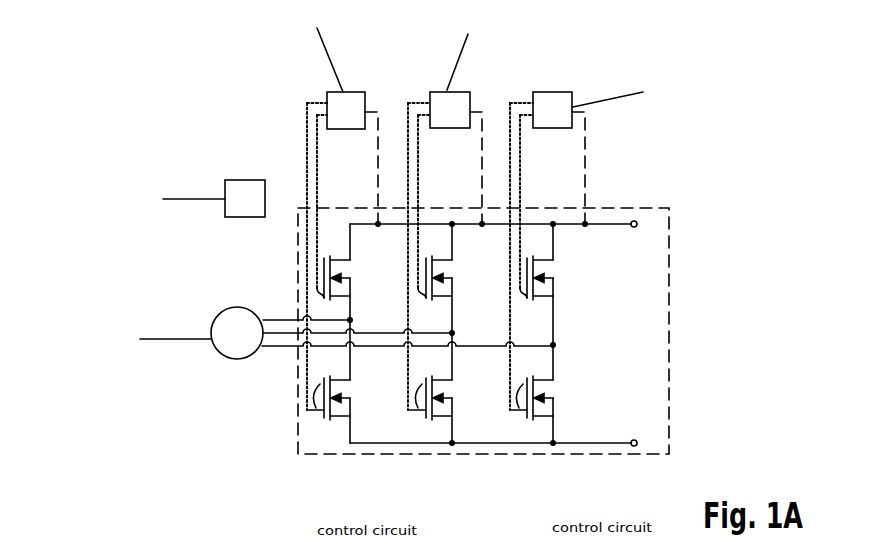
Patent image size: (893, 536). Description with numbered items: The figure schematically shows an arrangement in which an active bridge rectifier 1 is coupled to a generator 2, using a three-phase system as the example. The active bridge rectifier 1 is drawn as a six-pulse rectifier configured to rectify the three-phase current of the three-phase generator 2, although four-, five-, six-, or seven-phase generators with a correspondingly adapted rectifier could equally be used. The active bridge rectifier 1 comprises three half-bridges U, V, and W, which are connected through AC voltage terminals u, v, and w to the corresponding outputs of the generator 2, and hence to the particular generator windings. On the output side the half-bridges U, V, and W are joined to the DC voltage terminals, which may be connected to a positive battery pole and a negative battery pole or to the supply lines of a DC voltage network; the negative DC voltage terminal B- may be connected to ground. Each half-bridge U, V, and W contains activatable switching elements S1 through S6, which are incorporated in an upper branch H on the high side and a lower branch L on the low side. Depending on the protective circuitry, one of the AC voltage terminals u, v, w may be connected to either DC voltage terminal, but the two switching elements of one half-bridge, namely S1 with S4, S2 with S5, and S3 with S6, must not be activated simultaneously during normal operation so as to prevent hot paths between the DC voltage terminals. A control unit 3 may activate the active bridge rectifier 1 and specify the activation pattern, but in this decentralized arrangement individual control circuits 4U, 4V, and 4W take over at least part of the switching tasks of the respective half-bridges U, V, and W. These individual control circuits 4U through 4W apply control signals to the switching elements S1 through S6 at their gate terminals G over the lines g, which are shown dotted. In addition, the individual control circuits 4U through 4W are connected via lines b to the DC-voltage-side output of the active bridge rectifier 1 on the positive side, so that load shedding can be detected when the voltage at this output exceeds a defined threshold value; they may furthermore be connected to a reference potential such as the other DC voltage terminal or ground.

The active bridge rectifier 1 is at (633, 207).
The generator 2 is at (237, 307).
The control unit 3 is at (244, 180).
The individual control circuit 4U is at (367, 93).
The individual control circuit 4V is at (470, 93).
The individual control circuit 4W is at (572, 93).
The switching element S1 is at (364, 258).
The switching element S2 is at (465, 258).
The switching element S3 is at (566, 258).
The switching element S4 is at (367, 410).
The switching element S5 is at (468, 410).
The switching element S6 is at (571, 410).
The gate terminal G is at (418, 349).
The line g is at (310, 116).
The line b is at (377, 142).
The AC voltage terminal u is at (275, 318).
The AC voltage terminal v is at (268, 348).
The AC voltage terminal w is at (288, 348).
The half-bridge U is at (350, 201).
The half-bridge V is at (452, 201).
The half-bridge W is at (553, 201).
The upper branch H is at (622, 280).
The lower branch L is at (622, 399).
The DC voltage terminal B- is at (506, 445).